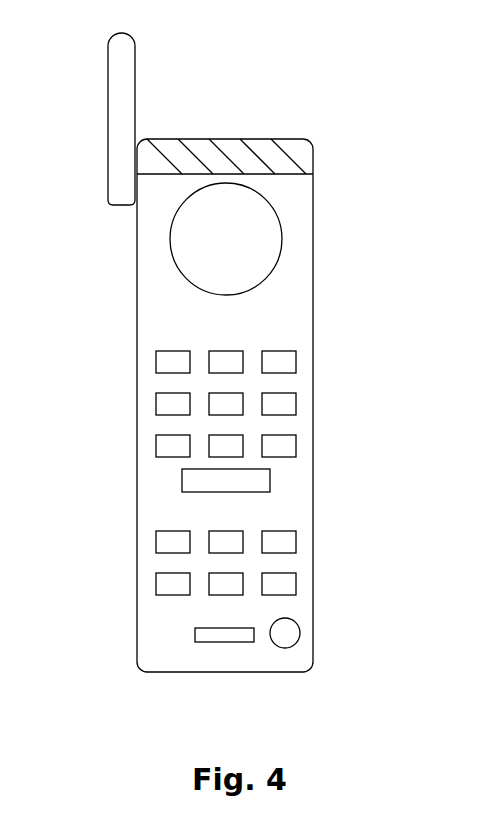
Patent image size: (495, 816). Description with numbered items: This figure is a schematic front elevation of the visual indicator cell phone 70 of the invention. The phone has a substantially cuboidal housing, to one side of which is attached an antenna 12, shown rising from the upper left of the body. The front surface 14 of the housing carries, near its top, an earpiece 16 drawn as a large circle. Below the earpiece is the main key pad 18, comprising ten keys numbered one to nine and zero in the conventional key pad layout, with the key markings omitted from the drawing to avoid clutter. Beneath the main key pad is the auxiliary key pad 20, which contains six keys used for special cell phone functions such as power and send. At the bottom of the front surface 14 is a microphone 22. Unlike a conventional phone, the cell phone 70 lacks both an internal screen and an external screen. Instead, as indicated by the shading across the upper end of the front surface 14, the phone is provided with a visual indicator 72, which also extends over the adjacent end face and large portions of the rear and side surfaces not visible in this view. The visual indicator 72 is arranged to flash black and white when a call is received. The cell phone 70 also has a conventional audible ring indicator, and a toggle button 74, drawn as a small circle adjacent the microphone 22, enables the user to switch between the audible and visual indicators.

The antenna 12 is at (125, 120).
The front surface 14 is at (155, 205).
The earpiece 16 is at (237, 227).
The main key pad 18 is at (225, 405).
The auxiliary key pad 20 is at (228, 540).
The microphone 22 is at (225, 633).
The visual indicator cell phone 70 is at (347, 157).
The visual indicator 72 is at (212, 157).
The toggle button 74 is at (285, 633).